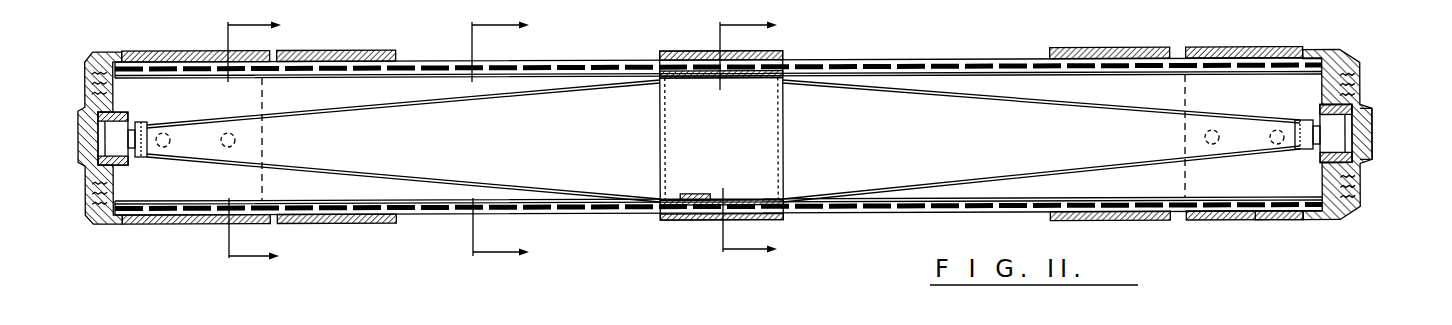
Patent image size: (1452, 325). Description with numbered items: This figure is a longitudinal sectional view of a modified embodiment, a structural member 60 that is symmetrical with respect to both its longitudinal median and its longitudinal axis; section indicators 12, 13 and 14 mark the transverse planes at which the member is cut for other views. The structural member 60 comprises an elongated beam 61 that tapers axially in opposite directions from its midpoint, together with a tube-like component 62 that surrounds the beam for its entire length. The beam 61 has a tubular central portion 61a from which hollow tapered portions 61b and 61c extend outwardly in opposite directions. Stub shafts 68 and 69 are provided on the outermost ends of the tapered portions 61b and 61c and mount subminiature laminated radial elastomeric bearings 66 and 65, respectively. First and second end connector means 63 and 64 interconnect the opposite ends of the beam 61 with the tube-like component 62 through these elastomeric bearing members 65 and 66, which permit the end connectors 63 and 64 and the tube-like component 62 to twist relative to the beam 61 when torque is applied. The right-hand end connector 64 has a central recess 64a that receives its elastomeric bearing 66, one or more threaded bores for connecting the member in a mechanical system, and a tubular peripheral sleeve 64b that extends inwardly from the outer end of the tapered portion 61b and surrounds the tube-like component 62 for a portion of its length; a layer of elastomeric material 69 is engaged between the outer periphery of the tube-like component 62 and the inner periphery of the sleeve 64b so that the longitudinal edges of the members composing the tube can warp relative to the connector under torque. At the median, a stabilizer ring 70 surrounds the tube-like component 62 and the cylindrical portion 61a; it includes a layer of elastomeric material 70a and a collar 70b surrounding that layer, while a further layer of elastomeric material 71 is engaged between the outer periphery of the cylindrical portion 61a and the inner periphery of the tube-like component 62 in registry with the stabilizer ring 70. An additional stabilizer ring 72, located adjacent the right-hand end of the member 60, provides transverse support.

The section line 12- 12 is at (278, 141).
The section line 13- 13 is at (523, 141).
The section line 14- 14 is at (952, 140).
The structural member 60 is at (724, 167).
The elongated beam 61 is at (723, 156).
The tubular central portion 61a is at (757, 158).
The tapered portion 61b is at (1112, 152).
The tapered portion 61c is at (405, 163).
The tube-like component 62 is at (890, 66).
The first end connector means 63 is at (98, 217).
The second end connector means 64 is at (1332, 217).
The central recess 64a is at (1421, 193).
The tubular peripheral sleeve 64b is at (1218, 218).
The elastomeric bearing member 65 is at (113, 157).
The elastomeric bearing member 66 is at (1342, 117).
The stub shaft 68 is at (1335, 136).
The stub shaft 69 is at (107, 140).
The stabilizer ring 70 is at (690, 174).
The layer of elastomeric material 70a is at (670, 222).
The collar 70b is at (692, 221).
The layer of elastomeric material 71 is at (693, 197).
The stabilizer ring 72 is at (1083, 56).